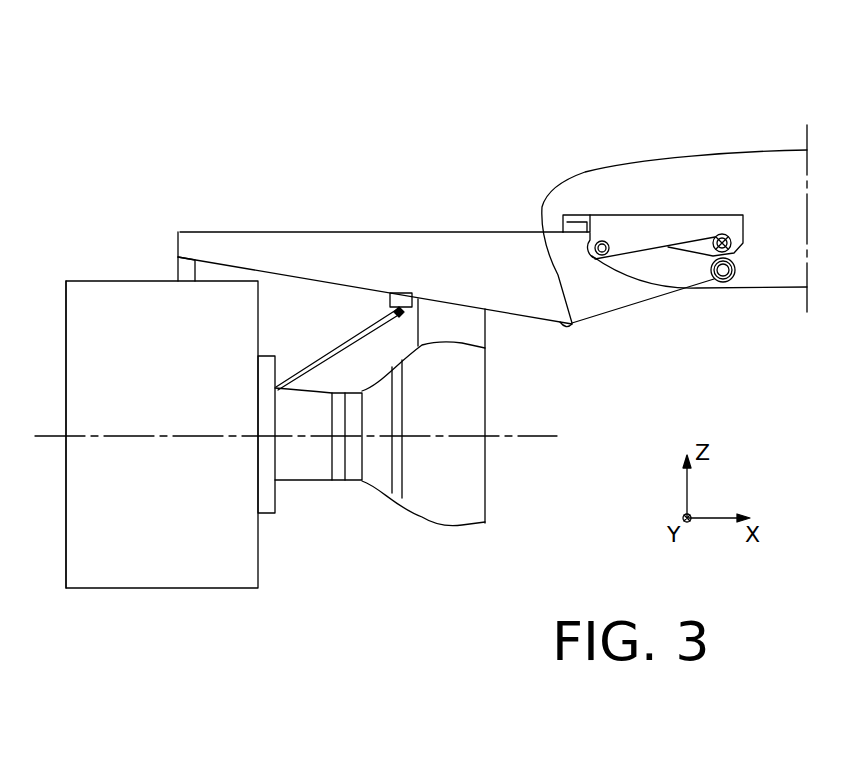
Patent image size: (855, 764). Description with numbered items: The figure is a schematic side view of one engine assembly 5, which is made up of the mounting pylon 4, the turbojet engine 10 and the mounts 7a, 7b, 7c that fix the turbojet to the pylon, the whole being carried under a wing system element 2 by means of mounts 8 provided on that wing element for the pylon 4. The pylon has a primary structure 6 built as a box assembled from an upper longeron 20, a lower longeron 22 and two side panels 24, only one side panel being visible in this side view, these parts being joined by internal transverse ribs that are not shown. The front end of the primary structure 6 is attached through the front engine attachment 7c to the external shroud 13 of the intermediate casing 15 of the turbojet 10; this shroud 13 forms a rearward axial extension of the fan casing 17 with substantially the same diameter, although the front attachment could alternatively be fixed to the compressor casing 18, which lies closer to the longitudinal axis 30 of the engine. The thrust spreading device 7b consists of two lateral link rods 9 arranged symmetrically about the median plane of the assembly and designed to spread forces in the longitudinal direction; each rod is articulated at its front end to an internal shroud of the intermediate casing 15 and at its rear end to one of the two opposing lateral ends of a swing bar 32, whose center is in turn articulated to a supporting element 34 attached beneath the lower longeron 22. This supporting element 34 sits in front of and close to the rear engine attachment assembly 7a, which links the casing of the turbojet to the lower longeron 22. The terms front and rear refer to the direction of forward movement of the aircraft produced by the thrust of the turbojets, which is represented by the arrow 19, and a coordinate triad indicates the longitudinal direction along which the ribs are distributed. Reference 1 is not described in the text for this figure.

The nacelle 1 is at (520, 223).
The wing system element 2 is at (752, 165).
The mounting pylon 4 is at (350, 200).
The engine assembly 5 is at (247, 110).
The primary structure 6 is at (295, 240).
The rear engine attachment assembly 7a is at (477, 333).
The thrust spreading device 7b is at (325, 352).
The front engine attachment 7c is at (183, 273).
The mounts 8 is at (717, 237).
The lateral link rods 9 is at (287, 378).
The turbojet engine 10 is at (95, 633).
The external shroud 13 is at (188, 301).
The intermediate casing 15 is at (230, 592).
The fan casing 17 is at (75, 298).
The compressor casing 18 is at (277, 480).
The arrow 19 is at (398, 88).
The upper longeron 20 is at (467, 230).
The lower longeron 22 is at (557, 324).
The side panels 24 is at (248, 240).
The longitudinal axis 30 is at (548, 437).
The swing bar 32 is at (418, 305).
The supporting element 34 is at (398, 293).